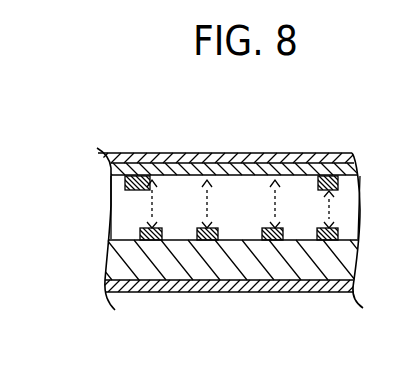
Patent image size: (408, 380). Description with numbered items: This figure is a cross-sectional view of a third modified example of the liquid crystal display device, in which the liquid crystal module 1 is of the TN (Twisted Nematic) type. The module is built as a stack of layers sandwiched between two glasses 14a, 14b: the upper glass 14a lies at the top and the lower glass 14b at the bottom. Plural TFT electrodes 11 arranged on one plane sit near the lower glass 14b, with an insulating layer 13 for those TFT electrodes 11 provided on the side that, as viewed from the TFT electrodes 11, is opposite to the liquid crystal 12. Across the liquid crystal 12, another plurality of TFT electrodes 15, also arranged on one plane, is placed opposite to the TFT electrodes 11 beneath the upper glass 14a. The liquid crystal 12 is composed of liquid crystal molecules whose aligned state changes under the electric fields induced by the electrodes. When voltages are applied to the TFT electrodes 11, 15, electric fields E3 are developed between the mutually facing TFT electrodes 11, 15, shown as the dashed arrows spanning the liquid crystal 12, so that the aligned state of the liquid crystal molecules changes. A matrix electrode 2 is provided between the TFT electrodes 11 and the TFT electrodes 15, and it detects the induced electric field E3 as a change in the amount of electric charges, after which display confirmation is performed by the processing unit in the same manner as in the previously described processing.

The liquid crystal module 1 is at (91, 185).
The matrix electrode 2 is at (136, 175).
The TFT electrodes 11 is at (329, 241).
The liquid crystal 12 is at (118, 220).
The insulating layer 13 is at (110, 265).
The glass 14a is at (124, 159).
The glass 14b is at (151, 287).
The TFT electrodes 15 is at (239, 157).
The electric fields E3 is at (206, 224).